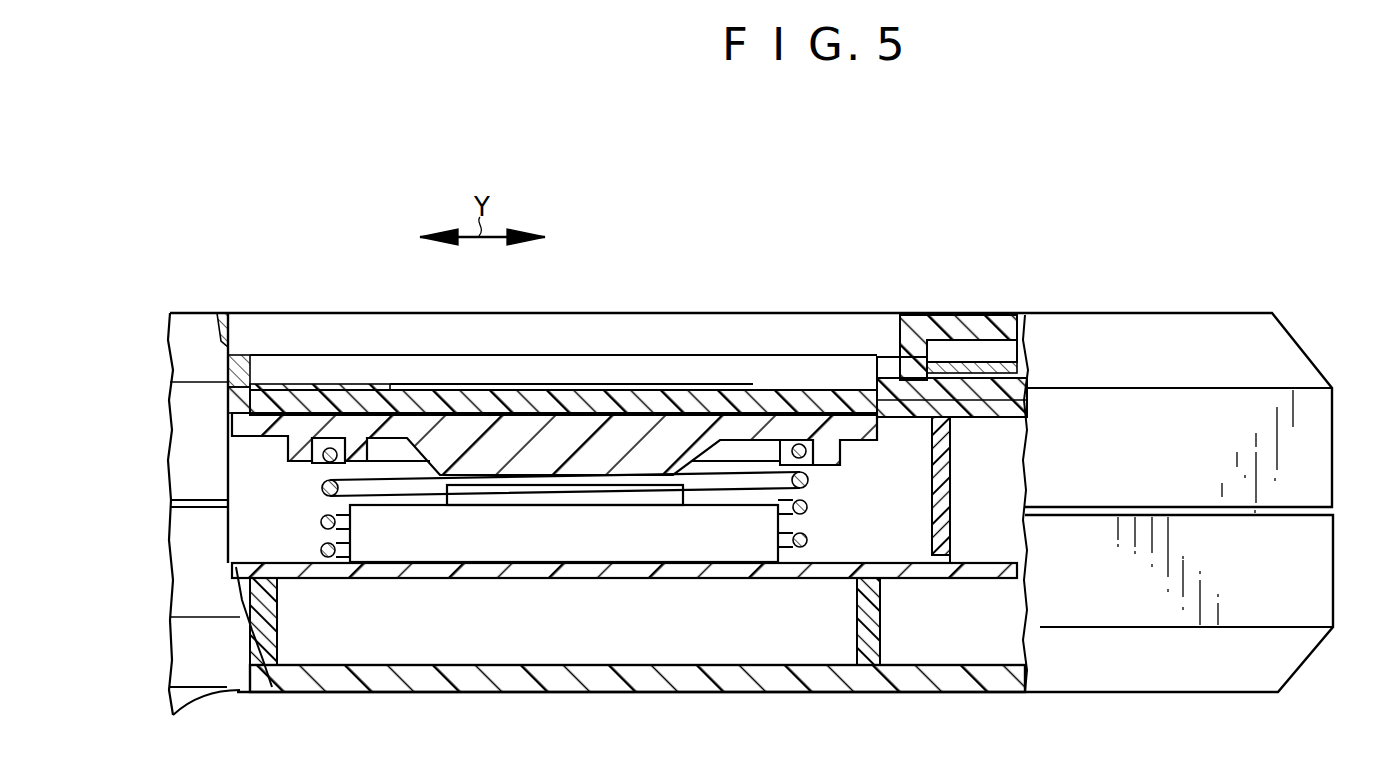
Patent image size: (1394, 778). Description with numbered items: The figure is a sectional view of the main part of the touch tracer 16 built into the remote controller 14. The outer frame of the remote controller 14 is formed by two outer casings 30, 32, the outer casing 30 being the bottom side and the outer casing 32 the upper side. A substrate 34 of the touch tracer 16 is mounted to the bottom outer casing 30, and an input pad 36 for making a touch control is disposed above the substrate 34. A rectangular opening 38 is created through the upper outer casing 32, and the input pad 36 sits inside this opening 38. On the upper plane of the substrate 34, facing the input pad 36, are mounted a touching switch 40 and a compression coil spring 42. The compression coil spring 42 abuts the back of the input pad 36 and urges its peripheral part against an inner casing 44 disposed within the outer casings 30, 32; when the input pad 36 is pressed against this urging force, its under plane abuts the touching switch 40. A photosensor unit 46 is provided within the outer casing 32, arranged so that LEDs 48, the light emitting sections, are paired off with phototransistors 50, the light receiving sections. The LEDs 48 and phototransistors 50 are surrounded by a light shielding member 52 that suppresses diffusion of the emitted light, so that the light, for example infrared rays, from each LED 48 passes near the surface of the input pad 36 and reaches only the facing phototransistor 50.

The remote controller 14 is at (1297, 227).
The touch tracer 16 is at (764, 288).
The outer casing 30 is at (1078, 678).
The outer casing 32 is at (1118, 337).
The substrate 34 is at (762, 582).
The input pad 36 is at (793, 387).
The rectangular opening 38 is at (229, 323).
The touching switch 40 is at (575, 500).
The compression coil spring 42 is at (812, 506).
The inner casing 44 is at (924, 432).
The photosensor unit 46 is at (993, 354).
The LED 48 is at (1027, 372).
The phototransistor 50 is at (952, 397).
The light shielding member 52 is at (957, 330).